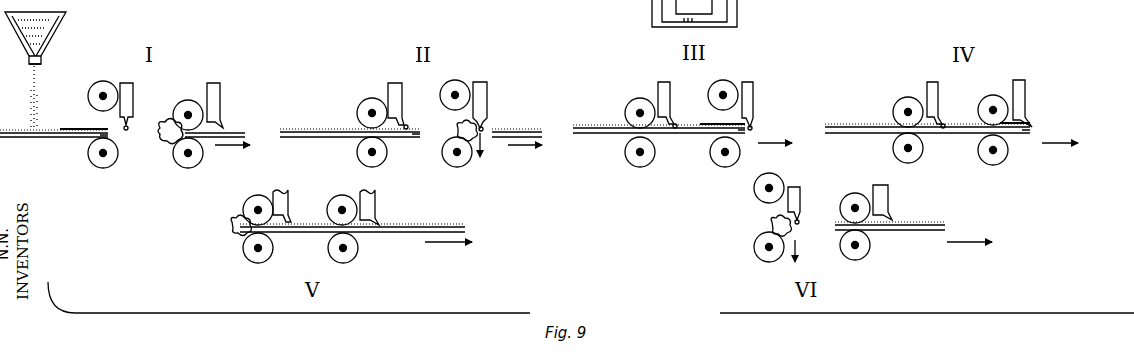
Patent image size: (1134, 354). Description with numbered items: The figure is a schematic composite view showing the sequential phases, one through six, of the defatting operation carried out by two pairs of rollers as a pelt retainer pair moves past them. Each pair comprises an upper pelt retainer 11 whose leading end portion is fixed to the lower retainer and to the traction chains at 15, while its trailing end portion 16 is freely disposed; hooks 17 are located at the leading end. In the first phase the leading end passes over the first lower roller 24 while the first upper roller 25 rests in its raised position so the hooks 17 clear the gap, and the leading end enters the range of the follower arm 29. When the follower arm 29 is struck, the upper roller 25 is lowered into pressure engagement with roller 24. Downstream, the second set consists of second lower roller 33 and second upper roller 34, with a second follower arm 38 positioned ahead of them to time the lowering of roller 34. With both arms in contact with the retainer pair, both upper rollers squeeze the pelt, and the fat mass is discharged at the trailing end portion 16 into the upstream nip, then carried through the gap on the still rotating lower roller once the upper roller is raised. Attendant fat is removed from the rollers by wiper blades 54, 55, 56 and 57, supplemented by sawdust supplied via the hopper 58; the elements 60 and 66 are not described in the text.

The upper pelt retainer 11 is at (20, 130).
The fixed leading end portion 15 is at (108, 137).
The trailing end portion 16 is at (188, 132).
The hook 17 is at (87, 128).
The first lower roller 24 is at (100, 167).
The first upper roller 25 is at (104, 81).
The follower arm 29 is at (128, 132).
The second lower roller 33 is at (190, 168).
The second upper roller 34 is at (196, 110).
The follower arm 38 is at (222, 128).
The wiper blade 54 is at (84, 149).
The wiper blade 55 is at (173, 160).
The wiper blade 56 is at (87, 82).
The wiper blade 57 is at (175, 101).
The hopper 58 is at (64, 18).
The hopper outlet 60 is at (30, 62).
The heating device 66 is at (650, 13).